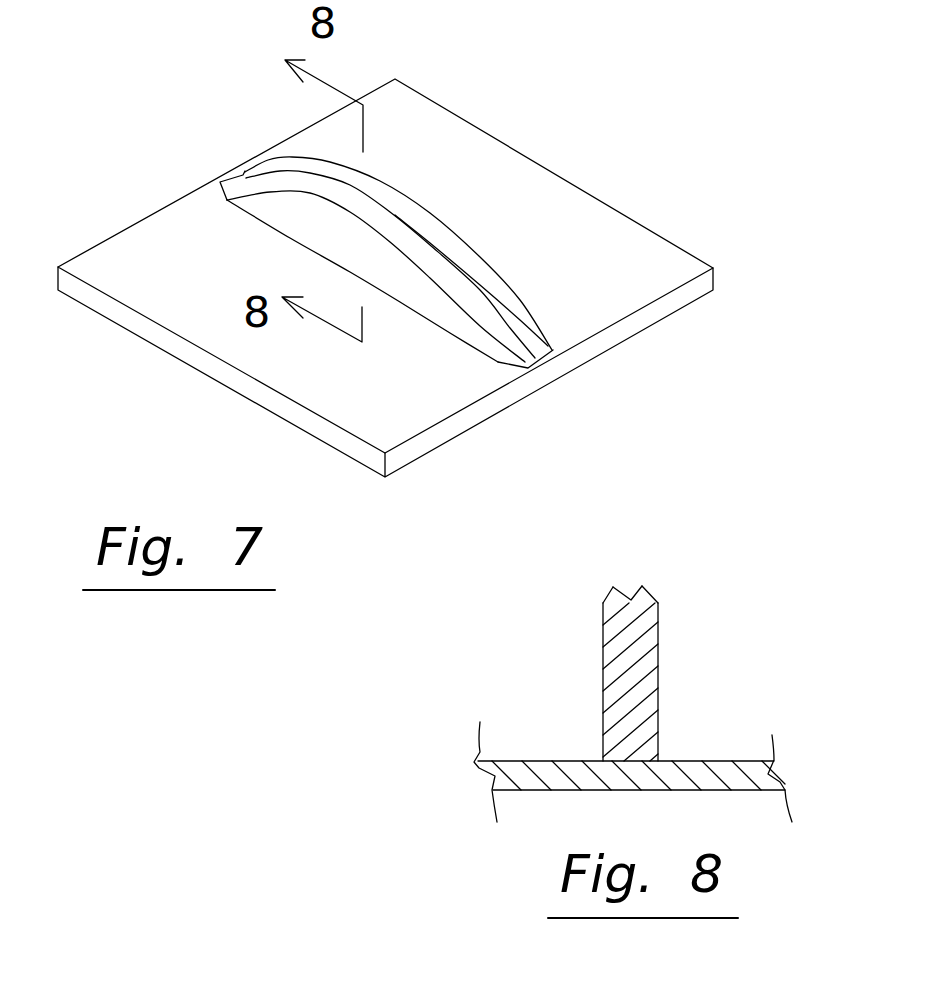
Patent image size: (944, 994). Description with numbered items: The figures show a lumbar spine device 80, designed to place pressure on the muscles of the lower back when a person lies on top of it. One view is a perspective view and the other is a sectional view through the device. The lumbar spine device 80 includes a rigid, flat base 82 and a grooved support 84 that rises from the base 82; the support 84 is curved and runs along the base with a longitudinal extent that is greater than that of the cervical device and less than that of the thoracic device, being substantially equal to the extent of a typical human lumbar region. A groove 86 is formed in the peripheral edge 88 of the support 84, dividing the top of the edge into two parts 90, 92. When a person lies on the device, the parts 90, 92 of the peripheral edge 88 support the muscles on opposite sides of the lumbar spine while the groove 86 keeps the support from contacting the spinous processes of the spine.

In FIG. 7, the lumbar spine device 80 is at (182, 109).
In FIG. 8, the lumbar spine device 80 is at (520, 703).
In FIG. 7, the base 82 is at (572, 197).
In FIG. 8, the base 82 is at (715, 760).
In FIG. 7, the grooved support 84 is at (335, 235).
In FIG. 8, the grooved support 84 is at (658, 653).
In FIG. 8, the groove 86 is at (628, 588).
In FIG. 7, the peripheral edge 88 is at (447, 320).
In FIG. 8, the peripheral edge 88 is at (593, 679).
In FIG. 8, the part of peripheral edge 90 is at (606, 584).
In FIG. 8, the part of peripheral edge 92 is at (643, 587).